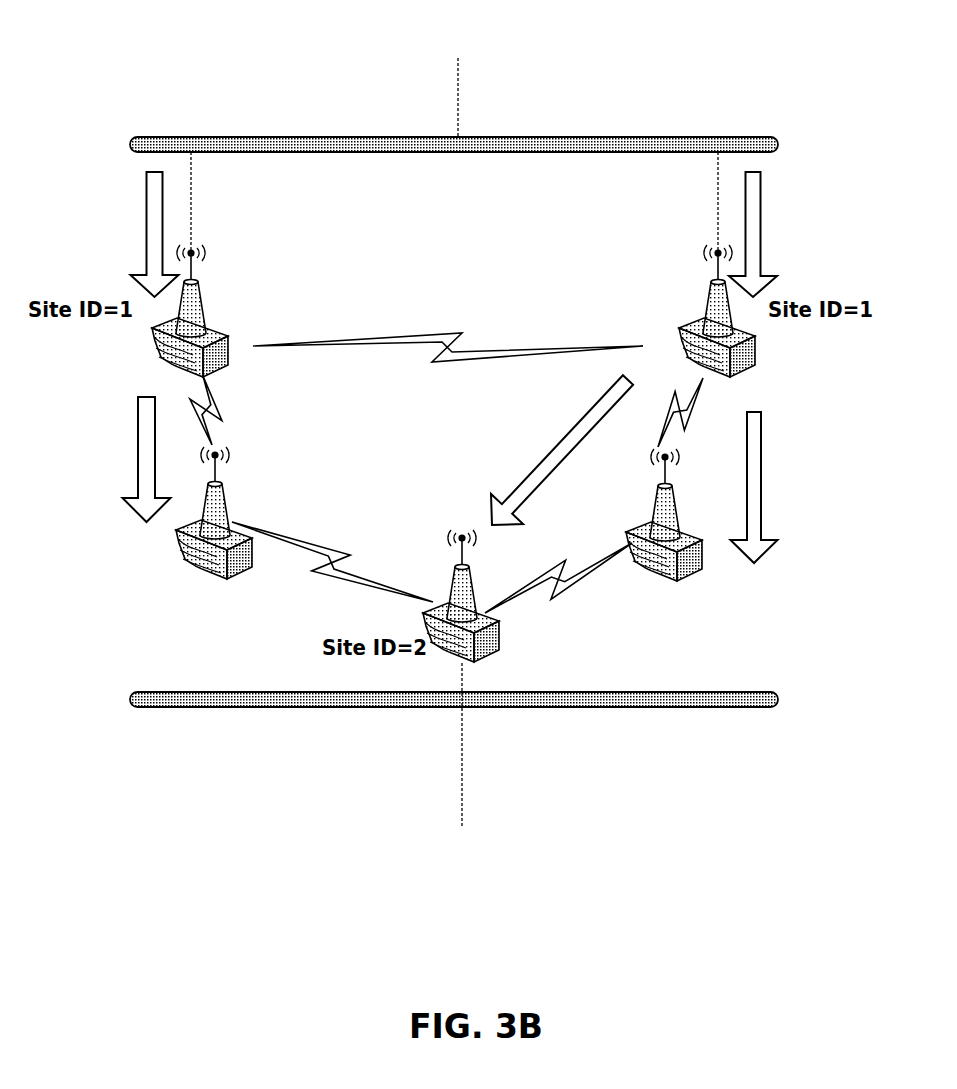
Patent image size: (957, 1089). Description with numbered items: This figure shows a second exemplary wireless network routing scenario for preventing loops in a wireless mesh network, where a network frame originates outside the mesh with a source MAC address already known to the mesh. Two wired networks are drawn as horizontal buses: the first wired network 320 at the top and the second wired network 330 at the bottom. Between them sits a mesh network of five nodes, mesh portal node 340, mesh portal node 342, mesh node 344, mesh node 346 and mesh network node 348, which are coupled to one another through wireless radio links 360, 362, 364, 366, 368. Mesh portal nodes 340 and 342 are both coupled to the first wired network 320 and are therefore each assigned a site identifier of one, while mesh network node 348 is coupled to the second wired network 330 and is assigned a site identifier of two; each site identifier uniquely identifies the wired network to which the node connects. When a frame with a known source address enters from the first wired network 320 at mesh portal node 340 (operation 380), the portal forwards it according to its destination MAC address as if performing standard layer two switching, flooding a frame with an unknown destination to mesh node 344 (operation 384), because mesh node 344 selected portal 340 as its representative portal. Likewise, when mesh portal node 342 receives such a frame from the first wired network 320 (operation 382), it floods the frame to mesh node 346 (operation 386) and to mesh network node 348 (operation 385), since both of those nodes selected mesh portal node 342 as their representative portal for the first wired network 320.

The wired network 1 320 is at (357, 26).
The wired network 2 330 is at (357, 857).
The mesh portal node 340 is at (203, 302).
The mesh portal node 342 is at (703, 310).
The mesh node 344 is at (223, 490).
The mesh node 346 is at (731, 478).
The mesh network node 348 is at (534, 564).
The wireless radio link 360 is at (537, 347).
The wireless radio link 362 is at (262, 418).
The wireless radio link 364 is at (741, 418).
The wireless radio link 366 is at (362, 537).
The wireless radio link 368 is at (599, 624).
The operation 380 is at (132, 231).
The operation 382 is at (812, 231).
The operation 384 is at (136, 452).
The operation 385 is at (550, 447).
The operation 386 is at (812, 480).